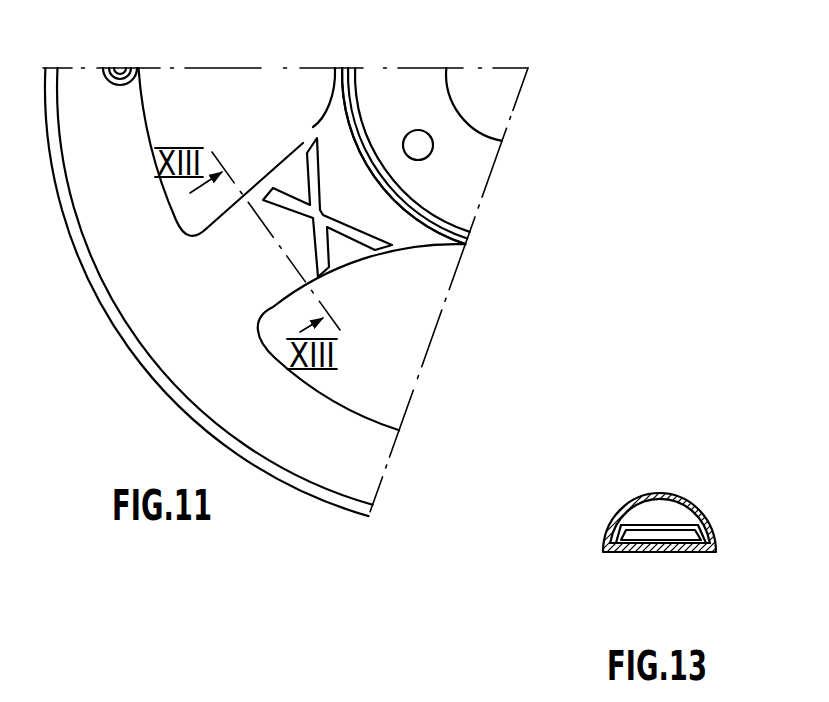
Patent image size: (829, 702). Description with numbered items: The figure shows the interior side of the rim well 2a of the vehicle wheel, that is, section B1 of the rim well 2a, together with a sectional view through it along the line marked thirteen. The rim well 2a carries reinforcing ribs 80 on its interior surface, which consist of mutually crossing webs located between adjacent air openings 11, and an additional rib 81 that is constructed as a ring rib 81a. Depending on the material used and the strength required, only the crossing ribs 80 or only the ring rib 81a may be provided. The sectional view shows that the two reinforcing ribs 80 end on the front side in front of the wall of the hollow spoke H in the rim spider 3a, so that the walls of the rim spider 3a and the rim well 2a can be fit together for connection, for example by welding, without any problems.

In FIG. 11, the rim well 2a is at (110, 242).
In FIG. 13, the rim well 2a is at (632, 558).
In FIG. 11, the section of the rim well shown from the interior side B1 is at (156, 356).
In FIG. 11, the air openings 11 is at (264, 117).
In FIG. 11, the additional rib 81 is at (374, 118).
In FIG. 11, the ring rib 81a is at (430, 223).
In FIG. 13, the ring rib 81a is at (690, 517).
In FIG. 11, the reinforcing ribs 80 is at (283, 212).
In FIG. 13, the reinforcing ribs 80 is at (681, 540).
In FIG. 13, the rim spider 3a is at (691, 490).
In FIG. 13, the hollow spoke H is at (648, 512).